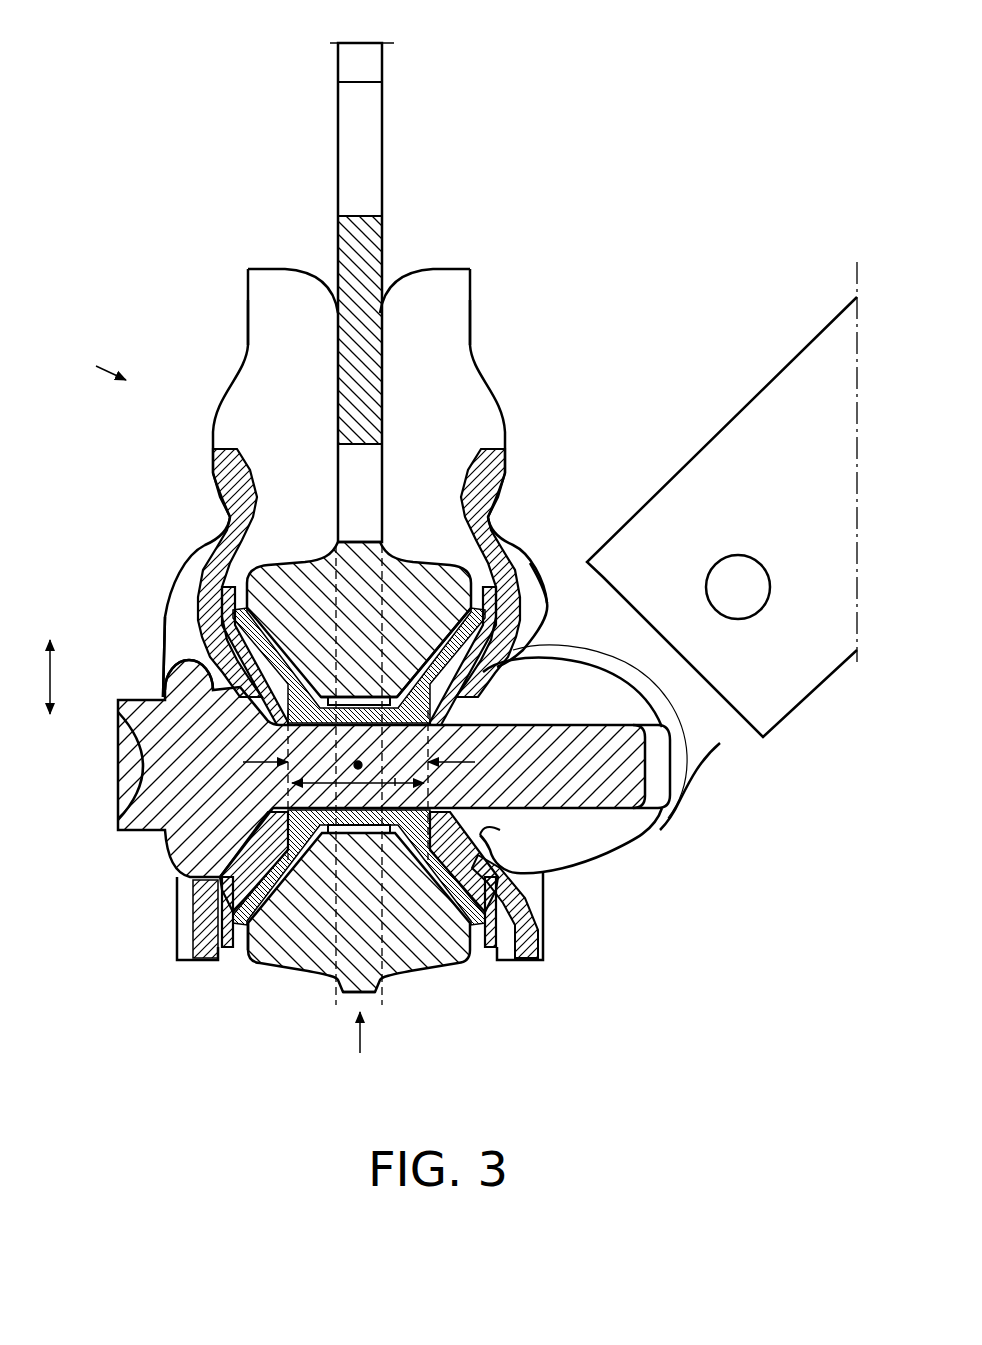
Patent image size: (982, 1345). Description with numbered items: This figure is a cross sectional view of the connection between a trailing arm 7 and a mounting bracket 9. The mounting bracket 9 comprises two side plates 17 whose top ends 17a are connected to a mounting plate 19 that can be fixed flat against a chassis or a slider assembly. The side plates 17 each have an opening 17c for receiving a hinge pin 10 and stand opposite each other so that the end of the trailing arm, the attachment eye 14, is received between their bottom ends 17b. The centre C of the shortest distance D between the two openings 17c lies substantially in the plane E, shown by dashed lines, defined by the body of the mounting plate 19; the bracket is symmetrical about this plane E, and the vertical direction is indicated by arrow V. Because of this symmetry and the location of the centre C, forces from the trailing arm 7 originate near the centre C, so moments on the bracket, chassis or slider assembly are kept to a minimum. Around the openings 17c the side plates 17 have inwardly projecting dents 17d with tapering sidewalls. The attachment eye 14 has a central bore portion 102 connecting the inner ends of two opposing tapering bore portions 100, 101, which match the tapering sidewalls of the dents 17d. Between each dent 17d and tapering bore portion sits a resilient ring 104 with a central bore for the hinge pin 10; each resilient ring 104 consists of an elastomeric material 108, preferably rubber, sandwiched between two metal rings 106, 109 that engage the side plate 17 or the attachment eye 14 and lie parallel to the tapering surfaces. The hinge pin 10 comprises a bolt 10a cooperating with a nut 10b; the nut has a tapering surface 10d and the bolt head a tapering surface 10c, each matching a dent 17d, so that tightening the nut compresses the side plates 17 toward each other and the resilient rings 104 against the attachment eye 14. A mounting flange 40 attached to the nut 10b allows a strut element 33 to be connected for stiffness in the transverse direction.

The mounting bracket 9 is at (99, 362).
The mounting plate 19 is at (355, 118).
The side plates 17 is at (262, 297).
The top ends 17a is at (266, 348).
The bottom ends 17b is at (170, 617).
The opening 17c is at (358, 760).
The dents 17d is at (200, 686).
The hinge pin 10 is at (108, 767).
The bolt 10a is at (627, 773).
The nut 10b is at (598, 862).
The tapering surface 10c is at (237, 700).
The tapering surface 10d is at (488, 680).
The strut element 33 is at (765, 417).
The mounting flange 40 is at (720, 743).
The tapering bore portion 100 is at (296, 646).
The tapering bore portion 101 is at (416, 645).
The central bore portion 102 is at (358, 694).
The resilient ring 104 is at (245, 627).
The metal ring 106 is at (245, 880).
The elastomeric material 108 is at (245, 905).
The metal ring 109 is at (246, 935).
The attachment eye 14 is at (290, 952).
The trailing arm 7 is at (390, 984).
The vertical direction V is at (50, 680).
The centre C is at (355, 765).
The shortest distance D is at (395, 778).
The plane E is at (359, 1051).